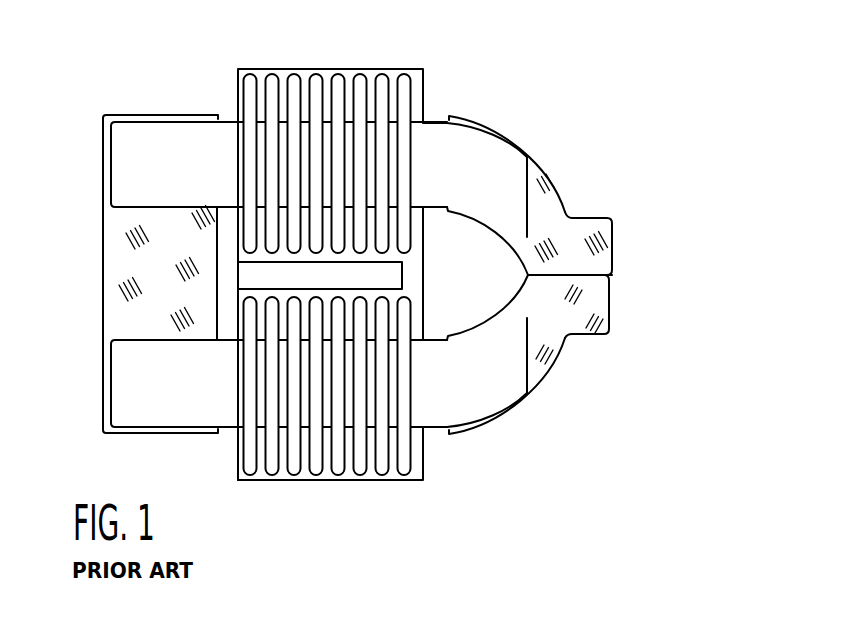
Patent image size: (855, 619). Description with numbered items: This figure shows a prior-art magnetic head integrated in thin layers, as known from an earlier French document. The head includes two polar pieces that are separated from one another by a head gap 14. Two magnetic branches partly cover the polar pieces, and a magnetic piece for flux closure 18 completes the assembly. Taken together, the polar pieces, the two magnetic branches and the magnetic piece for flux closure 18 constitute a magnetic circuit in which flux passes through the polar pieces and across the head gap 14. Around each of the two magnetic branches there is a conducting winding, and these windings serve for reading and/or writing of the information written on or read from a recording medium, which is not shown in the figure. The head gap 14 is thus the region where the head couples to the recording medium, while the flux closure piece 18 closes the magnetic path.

The magnetic piece for flux closure 18 is at (110, 267).
The head gap 14 is at (608, 275).